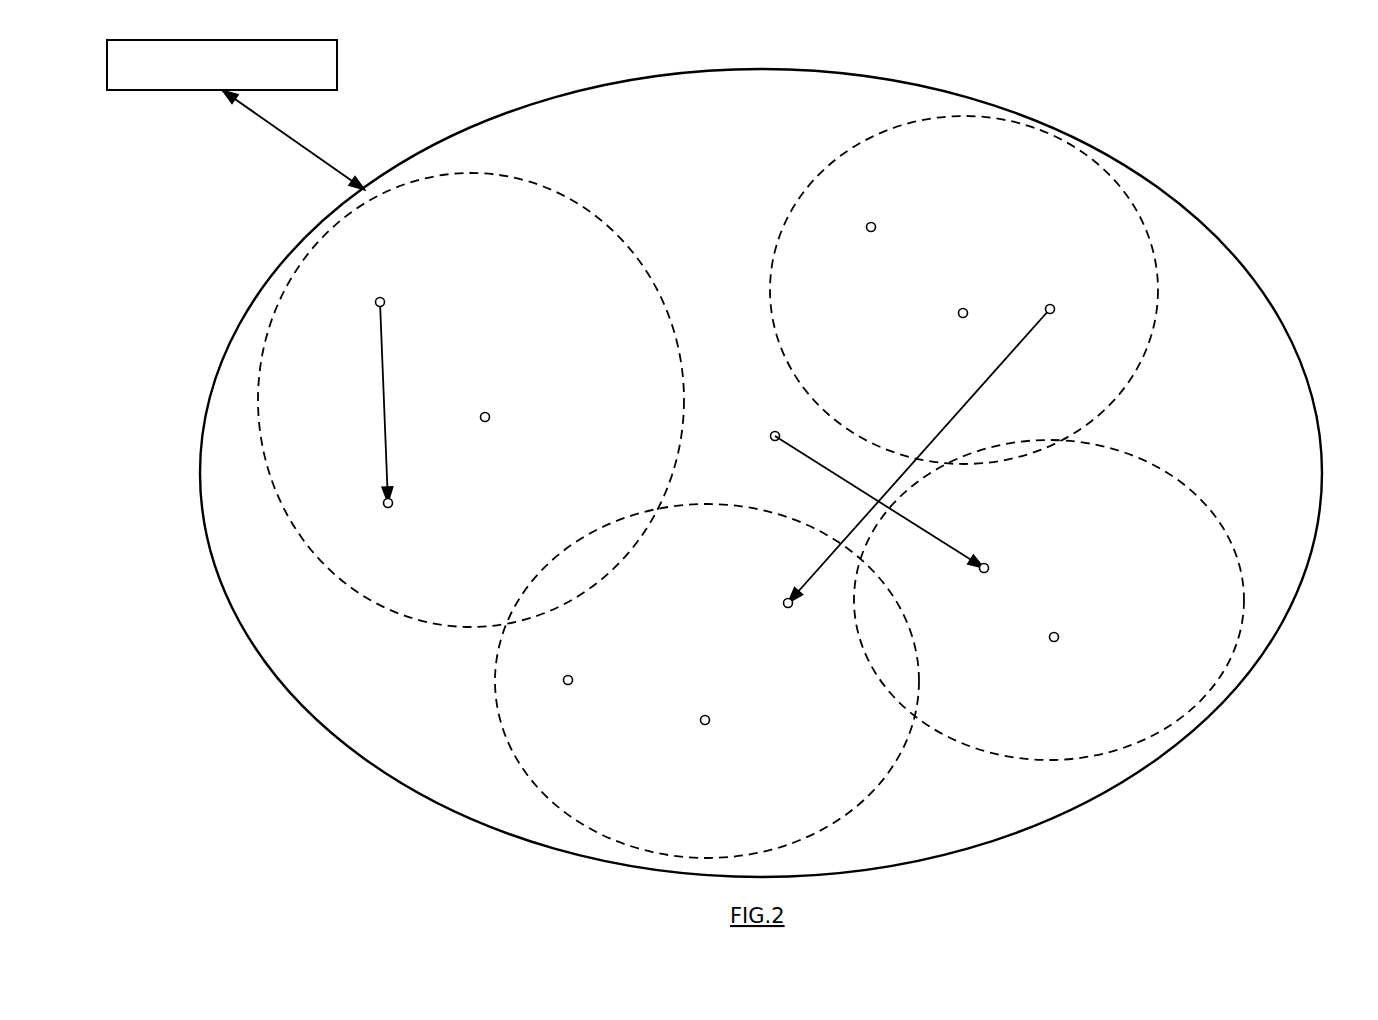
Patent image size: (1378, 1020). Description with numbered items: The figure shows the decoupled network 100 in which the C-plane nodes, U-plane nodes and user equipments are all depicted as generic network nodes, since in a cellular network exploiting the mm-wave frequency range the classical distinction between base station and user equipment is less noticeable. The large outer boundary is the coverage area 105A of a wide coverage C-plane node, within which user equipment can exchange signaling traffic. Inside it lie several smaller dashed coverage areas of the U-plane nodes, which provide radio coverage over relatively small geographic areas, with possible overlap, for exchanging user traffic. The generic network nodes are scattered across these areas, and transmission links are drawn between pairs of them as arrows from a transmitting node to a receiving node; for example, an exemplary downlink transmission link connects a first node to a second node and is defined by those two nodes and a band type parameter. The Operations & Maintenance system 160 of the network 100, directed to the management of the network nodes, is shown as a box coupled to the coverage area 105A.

The decoupled network 100 is at (1308, 153).
The coverage area 105A is at (938, 85).
The Operations & Maintenance (O&M) system 160 is at (236, 115).